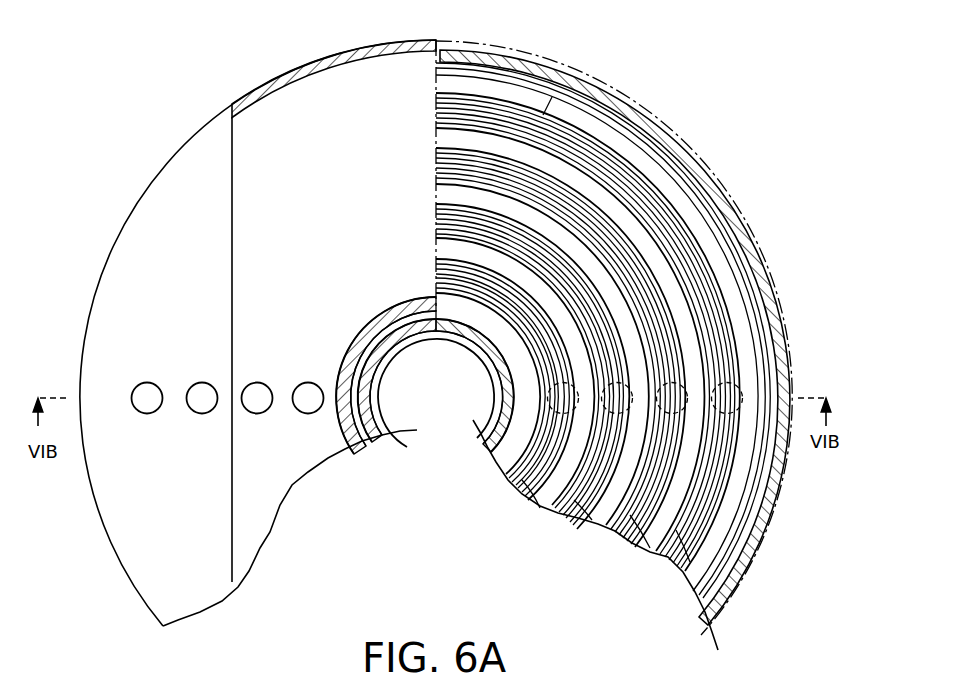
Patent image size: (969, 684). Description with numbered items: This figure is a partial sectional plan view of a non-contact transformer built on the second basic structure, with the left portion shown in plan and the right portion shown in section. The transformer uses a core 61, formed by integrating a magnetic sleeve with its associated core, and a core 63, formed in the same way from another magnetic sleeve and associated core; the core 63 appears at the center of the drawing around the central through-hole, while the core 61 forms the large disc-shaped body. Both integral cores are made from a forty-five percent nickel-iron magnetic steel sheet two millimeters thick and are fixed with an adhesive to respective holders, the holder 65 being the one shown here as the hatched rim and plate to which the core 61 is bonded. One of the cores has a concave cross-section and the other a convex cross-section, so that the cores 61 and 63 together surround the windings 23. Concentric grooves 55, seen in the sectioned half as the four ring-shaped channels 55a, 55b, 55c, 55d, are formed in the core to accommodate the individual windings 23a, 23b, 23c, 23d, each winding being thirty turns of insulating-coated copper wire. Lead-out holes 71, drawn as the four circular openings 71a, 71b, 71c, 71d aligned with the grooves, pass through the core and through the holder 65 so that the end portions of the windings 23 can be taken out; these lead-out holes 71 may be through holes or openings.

The core 61 is at (383, 102).
The holder 65 is at (293, 70).
The core 63 is at (488, 448).
The windings 23 is at (585, 80).
The winding 23a is at (592, 303).
The winding 23b is at (575, 247).
The winding 23c is at (567, 200).
The winding 23d is at (583, 140).
The lead-out holes 71 is at (133, 380).
The lead-out hole 71a is at (575, 385).
The lead-out hole 71b is at (628, 385).
The lead-out hole 71c is at (683, 385).
The lead-out hole 71d is at (737, 385).
The concentric grooves 55 is at (670, 590).
The concentric groove 55a is at (530, 468).
The concentric groove 55b is at (580, 490).
The concentric groove 55c is at (640, 508).
The concentric groove 55d is at (673, 520).